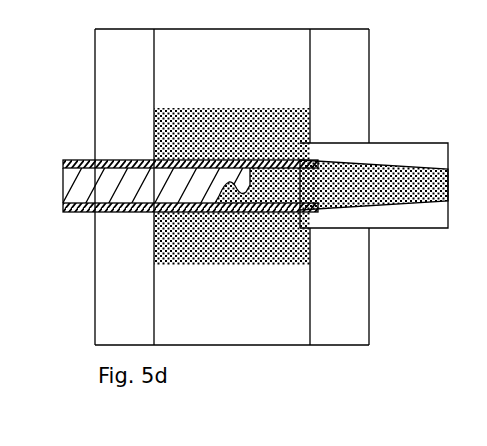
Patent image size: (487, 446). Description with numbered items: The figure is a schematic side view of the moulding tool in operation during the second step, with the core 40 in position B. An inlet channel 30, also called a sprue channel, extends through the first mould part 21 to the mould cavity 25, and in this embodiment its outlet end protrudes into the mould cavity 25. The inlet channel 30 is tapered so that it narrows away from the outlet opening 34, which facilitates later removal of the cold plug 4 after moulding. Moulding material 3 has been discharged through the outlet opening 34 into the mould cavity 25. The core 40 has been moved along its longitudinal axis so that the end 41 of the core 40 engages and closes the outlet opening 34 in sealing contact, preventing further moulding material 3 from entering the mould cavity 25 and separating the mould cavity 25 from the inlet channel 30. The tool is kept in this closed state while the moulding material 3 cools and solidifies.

The moulding material 3 is at (182, 244).
The cold plug 4 is at (269, 187).
The first mould part 21 is at (355, 74).
The mould cavity 25 is at (257, 248).
The inlet channel 30 is at (381, 175).
The outlet opening 34 is at (324, 188).
The core 40 is at (74, 213).
The end of the core 41 is at (267, 152).